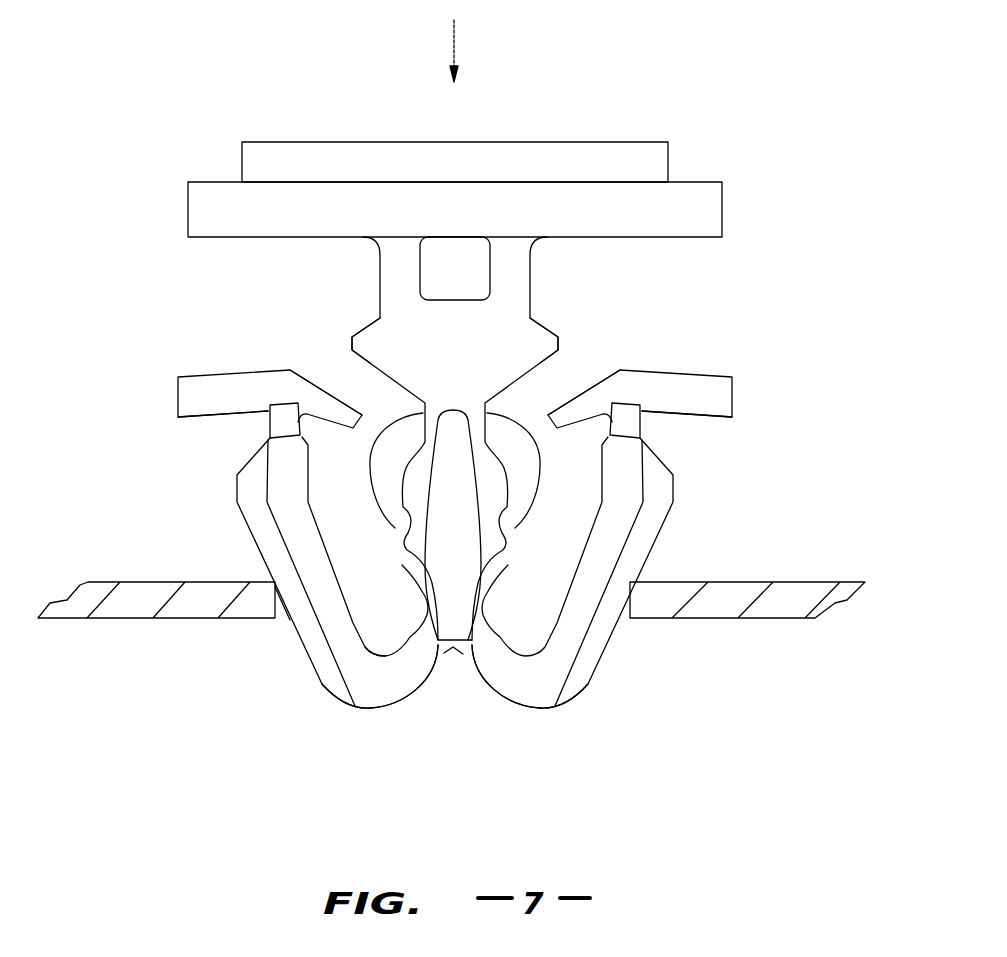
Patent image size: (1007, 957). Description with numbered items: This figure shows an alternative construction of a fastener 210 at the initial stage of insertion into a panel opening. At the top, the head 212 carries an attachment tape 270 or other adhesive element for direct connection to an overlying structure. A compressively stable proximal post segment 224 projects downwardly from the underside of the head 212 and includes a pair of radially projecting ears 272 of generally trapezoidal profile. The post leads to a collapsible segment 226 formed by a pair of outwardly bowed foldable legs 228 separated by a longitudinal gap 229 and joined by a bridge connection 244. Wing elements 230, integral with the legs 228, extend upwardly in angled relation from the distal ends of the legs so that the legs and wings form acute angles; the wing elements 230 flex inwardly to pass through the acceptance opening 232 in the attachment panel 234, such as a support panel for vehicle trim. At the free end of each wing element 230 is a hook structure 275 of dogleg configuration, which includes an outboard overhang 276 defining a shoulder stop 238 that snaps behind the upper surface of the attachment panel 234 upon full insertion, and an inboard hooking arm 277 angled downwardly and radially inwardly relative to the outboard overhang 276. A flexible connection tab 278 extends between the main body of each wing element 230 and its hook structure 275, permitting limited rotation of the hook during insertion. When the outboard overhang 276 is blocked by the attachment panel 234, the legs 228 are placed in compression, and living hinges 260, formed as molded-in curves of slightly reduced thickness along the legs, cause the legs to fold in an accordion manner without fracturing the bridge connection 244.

The fastener 210 is at (291, 96).
The head 212 is at (692, 182).
The proximal post segment 224 is at (533, 278).
The collapsible segment 226 is at (510, 490).
The foldable legs 228 is at (428, 560).
The longitudinal gap 229 is at (383, 655).
The wing elements 230 is at (255, 538).
The acceptance opening 232 is at (285, 627).
The attachment panel 234 is at (757, 582).
The shoulder stop 238 is at (178, 398).
The bridge connection 244 is at (453, 650).
The living hinges 260 is at (400, 530).
The attachment tape 270 is at (543, 142).
The radially projecting ears 272 is at (362, 328).
The hook structure 275 is at (445, 385).
The outboard overhang 276 is at (190, 420).
The inboard hooking arm 277 is at (353, 405).
The connection tab 278 is at (275, 420).